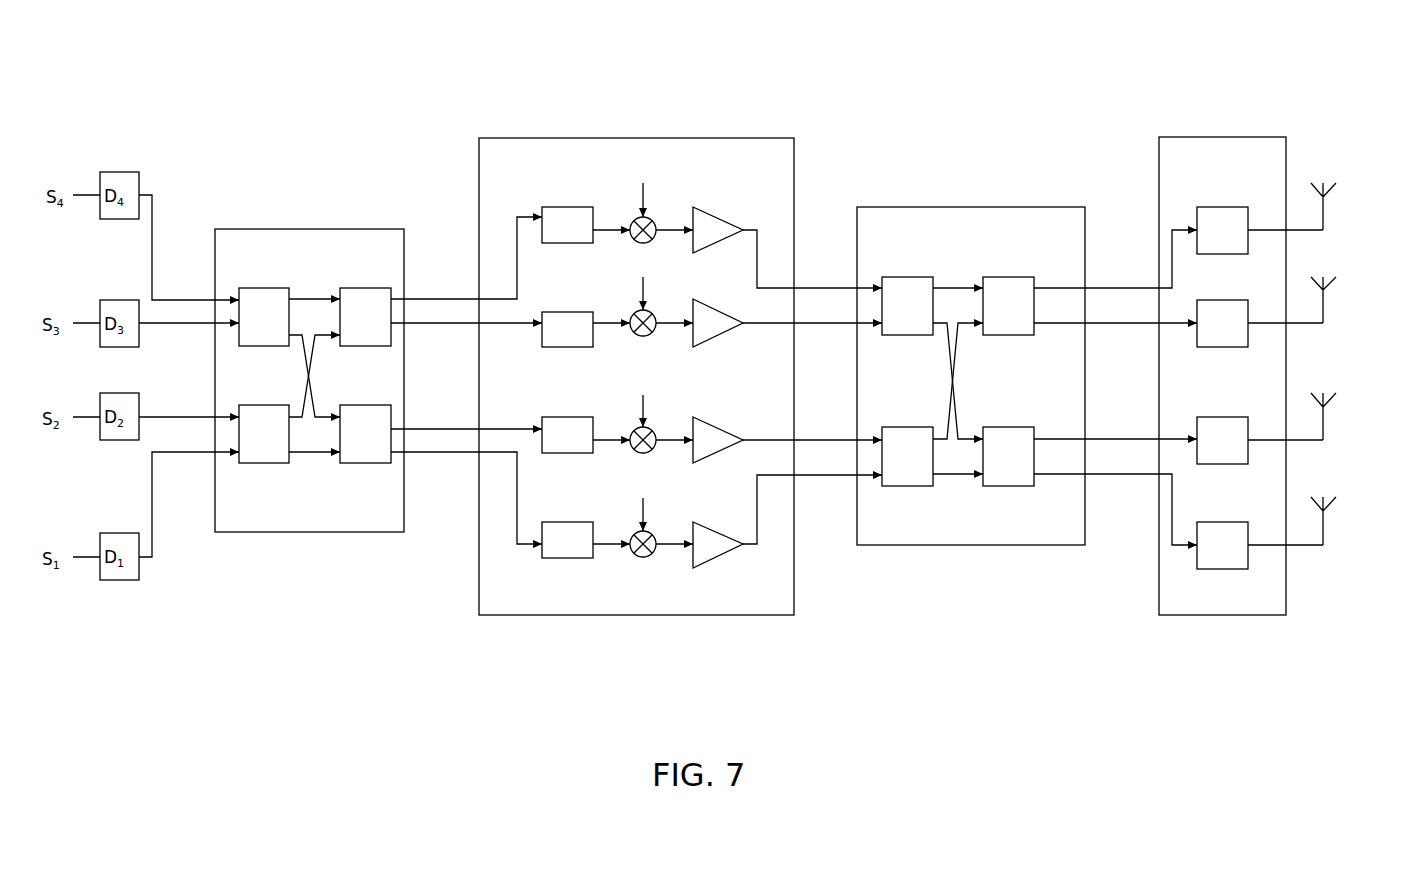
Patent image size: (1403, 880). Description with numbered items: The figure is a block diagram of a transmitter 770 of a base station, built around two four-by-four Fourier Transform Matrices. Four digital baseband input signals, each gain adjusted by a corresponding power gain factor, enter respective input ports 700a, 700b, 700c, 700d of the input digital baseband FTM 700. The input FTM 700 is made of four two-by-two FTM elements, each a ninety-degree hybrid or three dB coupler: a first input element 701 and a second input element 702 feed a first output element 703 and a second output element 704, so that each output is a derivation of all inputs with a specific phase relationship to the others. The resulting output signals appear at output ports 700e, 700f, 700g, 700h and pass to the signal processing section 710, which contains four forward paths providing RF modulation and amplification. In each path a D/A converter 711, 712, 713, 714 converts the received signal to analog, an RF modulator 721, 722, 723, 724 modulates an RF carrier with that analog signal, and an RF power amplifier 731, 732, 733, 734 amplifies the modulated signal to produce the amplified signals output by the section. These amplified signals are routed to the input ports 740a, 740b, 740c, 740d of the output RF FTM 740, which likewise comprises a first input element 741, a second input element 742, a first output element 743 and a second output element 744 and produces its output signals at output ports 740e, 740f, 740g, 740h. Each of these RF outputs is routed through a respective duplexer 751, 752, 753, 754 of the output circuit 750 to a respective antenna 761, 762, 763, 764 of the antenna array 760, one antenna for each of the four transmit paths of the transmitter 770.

The input digital baseband Fourier Transform Matrix 700 is at (309, 369).
The first input 2×2 FTM element 701 is at (267, 288).
The second input 2×2 FTM element 702 is at (253, 463).
The first output 2×2 FTM element 703 is at (352, 288).
The second output 2×2 FTM element 704 is at (348, 463).
The input port 700a is at (213, 298).
The input port 700b is at (213, 324).
The input port 700c is at (213, 416).
The input port 700d is at (215, 453).
The output port 700e is at (405, 299).
The output port 700f is at (405, 324).
The output port 700g is at (405, 429).
The output port 700h is at (405, 452).
The signal processing section 710 is at (636, 363).
The first D/A 711 is at (570, 207).
The second D/A 712 is at (557, 312).
The third D/A 713 is at (555, 417).
The fourth D/A 714 is at (555, 522).
The RF modulator 721 is at (645, 243).
The RF modulator 722 is at (645, 336).
The RF modulator 723 is at (645, 453).
The RF modulator 724 is at (645, 557).
The RF power amplifier 731 is at (722, 217).
The RF power amplifier 732 is at (720, 334).
The RF power amplifier 733 is at (720, 428).
The RF power amplifier 734 is at (718, 556).
The output RF Fourier Transform Matrix 740 is at (971, 363).
The first input 2×2 FTM element 741 is at (910, 277).
The second input 2×2 FTM element 742 is at (893, 487).
The first output 2×2 FTM element 743 is at (997, 277).
The second output 2×2 FTM element 744 is at (993, 487).
The input port 740a is at (857, 287).
The input port 740b is at (857, 324).
The input port 740c is at (857, 438).
The input port 740d is at (857, 476).
The output port 740e is at (1088, 287).
The output port 740f is at (1087, 324).
The output port 740g is at (1087, 438).
The output port 740h is at (1087, 475).
The output circuit 750 is at (1241, 363).
The duplexer 751 is at (1225, 207).
The duplexer 752 is at (1213, 300).
The duplexer 753 is at (1213, 417).
The duplexer 754 is at (1213, 522).
The antenna array 760 is at (1354, 330).
The antenna 761 is at (1325, 217).
The antenna 762 is at (1325, 309).
The antenna 763 is at (1325, 427).
The antenna 764 is at (1325, 532).
The transmitter 770 is at (562, 731).